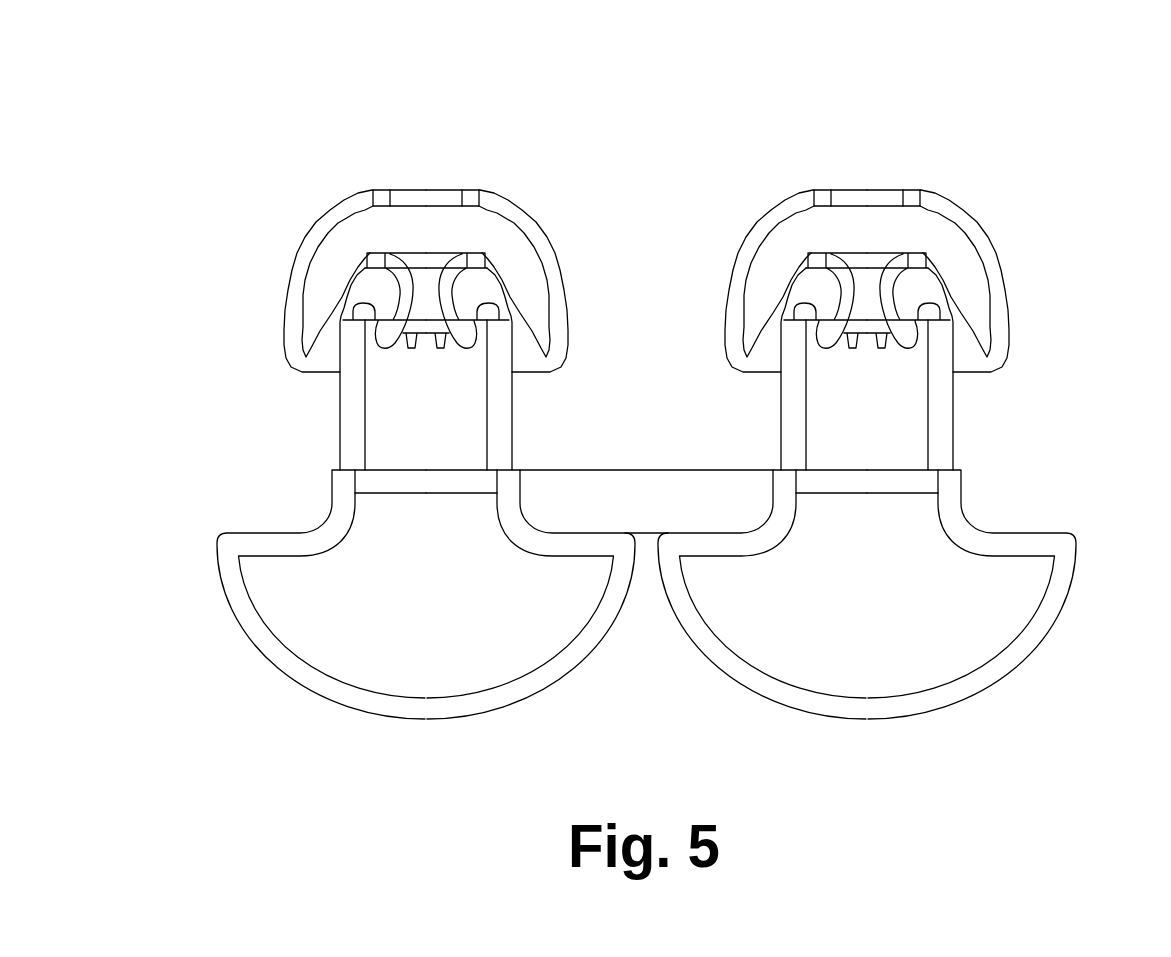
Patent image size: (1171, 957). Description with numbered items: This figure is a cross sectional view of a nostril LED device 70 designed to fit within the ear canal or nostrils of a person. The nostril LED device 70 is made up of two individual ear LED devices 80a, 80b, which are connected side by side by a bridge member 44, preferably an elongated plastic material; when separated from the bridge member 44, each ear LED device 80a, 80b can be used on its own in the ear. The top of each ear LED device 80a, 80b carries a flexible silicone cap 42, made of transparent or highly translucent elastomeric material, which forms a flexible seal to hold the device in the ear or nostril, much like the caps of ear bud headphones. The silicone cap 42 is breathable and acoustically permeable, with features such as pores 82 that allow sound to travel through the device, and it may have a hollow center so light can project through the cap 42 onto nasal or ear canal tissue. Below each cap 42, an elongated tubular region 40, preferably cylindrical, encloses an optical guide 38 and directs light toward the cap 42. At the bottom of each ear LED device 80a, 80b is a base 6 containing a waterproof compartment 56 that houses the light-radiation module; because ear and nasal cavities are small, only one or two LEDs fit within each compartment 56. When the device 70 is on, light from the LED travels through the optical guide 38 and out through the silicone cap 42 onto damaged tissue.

The nostril LED device 70 is at (282, 127).
The silicone cap 42 is at (317, 215).
The pores 82 is at (381, 192).
The ear LED device 80a is at (283, 290).
The ear LED device 80b is at (1010, 290).
The optical guide 38 is at (415, 430).
The elongated tubular region 40 is at (340, 430).
The bridge member 44 is at (647, 470).
The base 6 is at (278, 672).
The waterproof compartment 56 is at (412, 645).